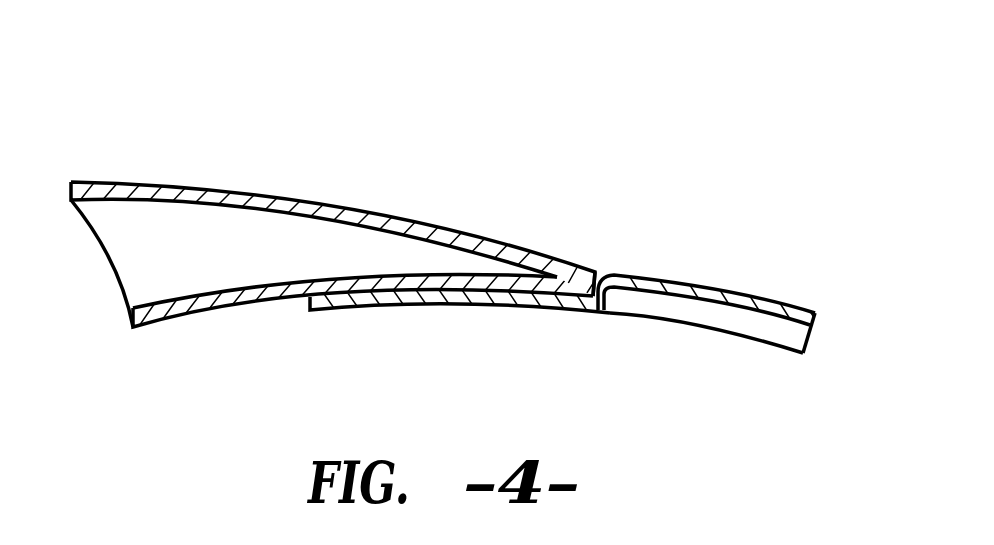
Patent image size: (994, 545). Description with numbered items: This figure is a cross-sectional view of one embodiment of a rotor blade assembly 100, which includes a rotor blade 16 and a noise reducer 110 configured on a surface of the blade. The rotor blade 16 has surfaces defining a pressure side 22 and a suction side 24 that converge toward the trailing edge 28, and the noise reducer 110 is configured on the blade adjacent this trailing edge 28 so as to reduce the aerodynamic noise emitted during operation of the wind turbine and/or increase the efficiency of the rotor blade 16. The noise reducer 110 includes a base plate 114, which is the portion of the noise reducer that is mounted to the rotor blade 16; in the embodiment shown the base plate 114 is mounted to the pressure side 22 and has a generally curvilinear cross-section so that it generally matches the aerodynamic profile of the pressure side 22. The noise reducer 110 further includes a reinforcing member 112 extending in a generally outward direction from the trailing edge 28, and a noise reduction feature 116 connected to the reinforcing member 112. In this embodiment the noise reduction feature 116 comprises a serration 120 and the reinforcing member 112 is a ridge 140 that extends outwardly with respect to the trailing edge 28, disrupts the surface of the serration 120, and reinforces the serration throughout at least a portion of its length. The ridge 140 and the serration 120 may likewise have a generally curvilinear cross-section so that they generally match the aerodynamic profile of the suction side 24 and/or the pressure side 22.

The rotor blade assembly 100 is at (172, 111).
The rotor blade 16 is at (127, 176).
The suction side 24 is at (318, 200).
The pressure side 22 is at (237, 310).
The trailing edge 28 is at (599, 271).
The base plate 114 is at (445, 312).
The noise reducer 110 is at (712, 248).
The reinforcing member 112 is at (826, 313).
The noise reduction feature 116 is at (759, 353).
The serration 120 is at (687, 328).
The ridge 140 is at (817, 317).